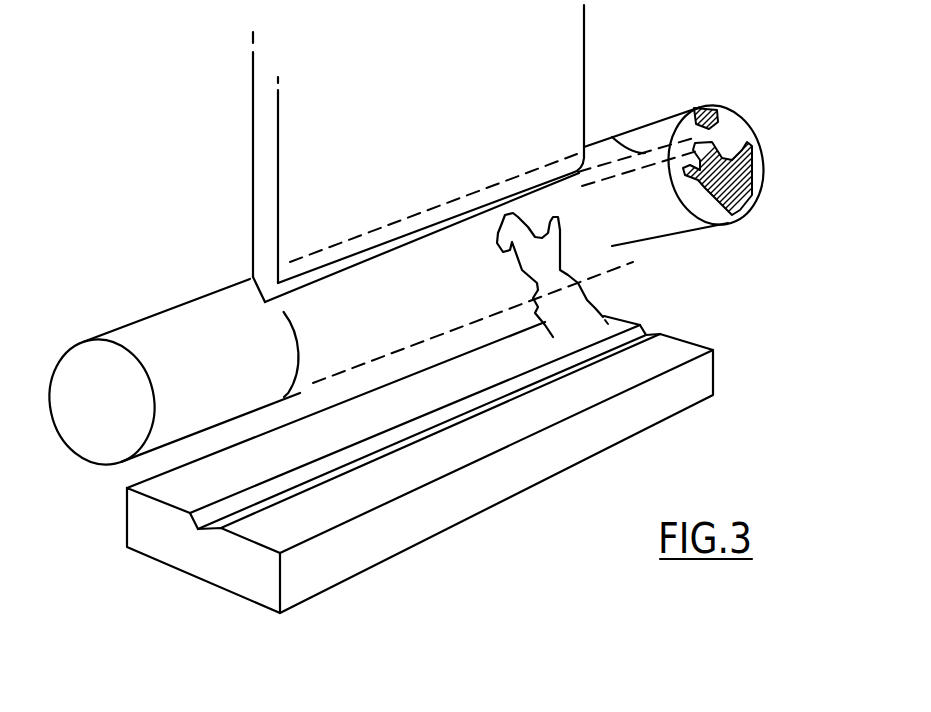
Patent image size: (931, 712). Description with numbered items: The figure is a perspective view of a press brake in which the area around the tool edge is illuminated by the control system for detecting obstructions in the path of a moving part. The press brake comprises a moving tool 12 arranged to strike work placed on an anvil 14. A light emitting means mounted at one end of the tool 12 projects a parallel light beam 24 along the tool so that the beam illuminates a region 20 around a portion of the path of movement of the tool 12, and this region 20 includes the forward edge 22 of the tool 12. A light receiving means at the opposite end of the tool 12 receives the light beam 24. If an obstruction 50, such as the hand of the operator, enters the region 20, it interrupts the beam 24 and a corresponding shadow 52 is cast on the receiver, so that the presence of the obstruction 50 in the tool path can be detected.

The tool 12 is at (381, 177).
The anvil 14 is at (182, 538).
The region 20 is at (430, 327).
The forward edge 22 is at (325, 281).
The parallel light beam 24 is at (90, 377).
The obstruction 50 is at (667, 208).
The shadow 52 is at (740, 178).